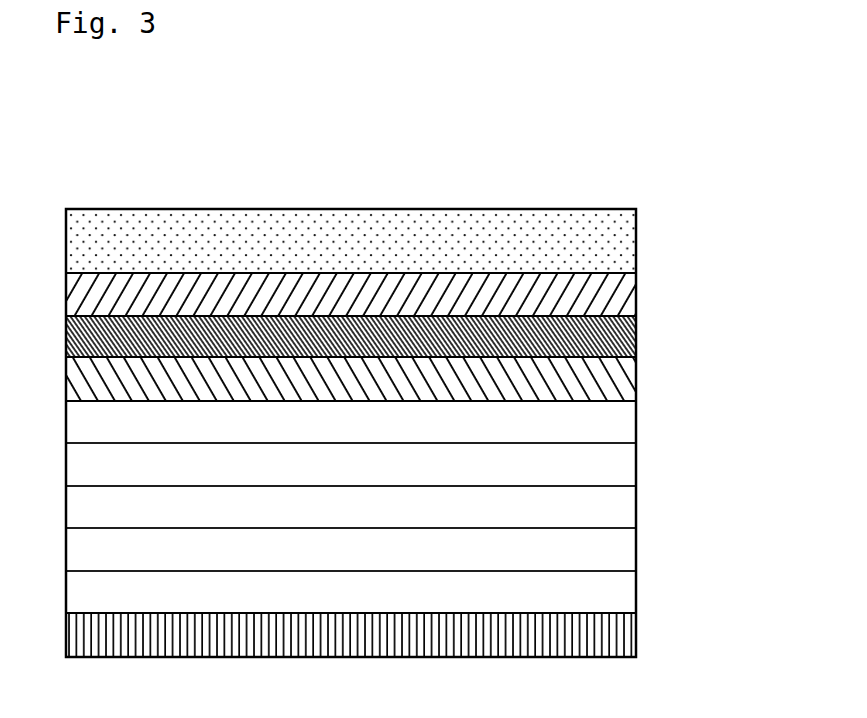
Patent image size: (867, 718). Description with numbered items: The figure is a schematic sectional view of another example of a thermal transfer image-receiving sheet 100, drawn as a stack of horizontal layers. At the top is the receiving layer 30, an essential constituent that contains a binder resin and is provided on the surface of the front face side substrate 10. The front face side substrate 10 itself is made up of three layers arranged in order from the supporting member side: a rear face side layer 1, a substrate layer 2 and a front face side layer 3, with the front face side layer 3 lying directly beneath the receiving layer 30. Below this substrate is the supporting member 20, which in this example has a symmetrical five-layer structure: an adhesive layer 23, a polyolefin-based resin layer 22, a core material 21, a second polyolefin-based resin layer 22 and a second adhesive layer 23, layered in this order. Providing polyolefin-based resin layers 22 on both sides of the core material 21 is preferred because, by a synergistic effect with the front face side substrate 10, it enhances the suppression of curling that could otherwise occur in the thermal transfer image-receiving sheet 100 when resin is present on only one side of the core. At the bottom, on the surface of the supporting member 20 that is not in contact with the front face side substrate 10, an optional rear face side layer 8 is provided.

The thermal transfer image-receiving sheet 100 is at (512, 195).
The receiving layer 30 is at (583, 247).
The front face side substrate 10 is at (465, 331).
The front face side layer 3 is at (587, 298).
The substrate layer 2 is at (587, 337).
The rear face side layer 1 is at (587, 382).
The supporting member 20 is at (464, 509).
The adhesive layer 23 is at (583, 424).
The polyolefin-based resin layer 22 is at (584, 467).
The core material 21 is at (590, 510).
The rear face side layer 8 is at (590, 638).